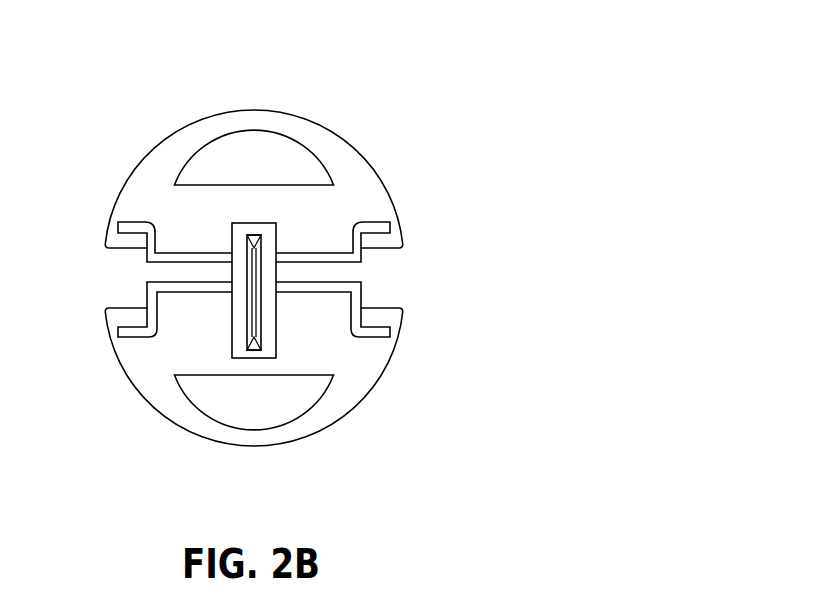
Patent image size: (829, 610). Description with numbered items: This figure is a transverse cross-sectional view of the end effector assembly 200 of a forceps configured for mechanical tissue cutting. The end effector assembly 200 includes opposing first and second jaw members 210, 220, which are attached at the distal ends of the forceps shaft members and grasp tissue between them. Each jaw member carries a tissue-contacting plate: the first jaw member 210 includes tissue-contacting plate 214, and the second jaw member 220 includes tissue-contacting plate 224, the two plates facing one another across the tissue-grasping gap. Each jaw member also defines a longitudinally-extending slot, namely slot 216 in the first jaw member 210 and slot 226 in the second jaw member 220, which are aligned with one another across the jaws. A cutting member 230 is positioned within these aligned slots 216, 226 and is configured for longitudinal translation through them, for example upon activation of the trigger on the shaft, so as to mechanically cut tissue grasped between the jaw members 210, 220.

The end effector assembly 200 is at (363, 72).
The first jaw member 210 is at (230, 107).
The tissue-contacting plate 214 is at (350, 264).
The longitudinally-extending slot 216 is at (253, 223).
The second jaw member 220 is at (287, 462).
The tissue-contacting plate 224 is at (348, 278).
The longitudinally-extending slot 226 is at (253, 358).
The cutting member 230 is at (246, 294).